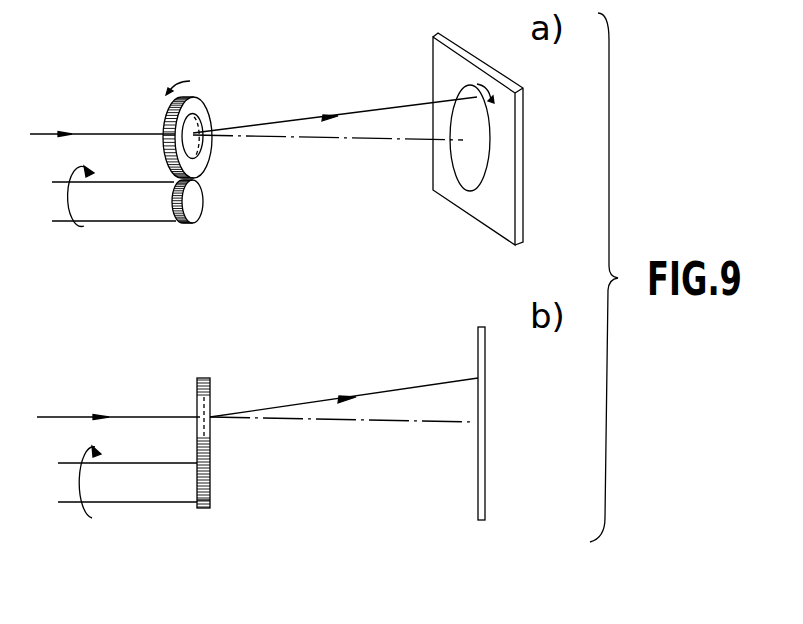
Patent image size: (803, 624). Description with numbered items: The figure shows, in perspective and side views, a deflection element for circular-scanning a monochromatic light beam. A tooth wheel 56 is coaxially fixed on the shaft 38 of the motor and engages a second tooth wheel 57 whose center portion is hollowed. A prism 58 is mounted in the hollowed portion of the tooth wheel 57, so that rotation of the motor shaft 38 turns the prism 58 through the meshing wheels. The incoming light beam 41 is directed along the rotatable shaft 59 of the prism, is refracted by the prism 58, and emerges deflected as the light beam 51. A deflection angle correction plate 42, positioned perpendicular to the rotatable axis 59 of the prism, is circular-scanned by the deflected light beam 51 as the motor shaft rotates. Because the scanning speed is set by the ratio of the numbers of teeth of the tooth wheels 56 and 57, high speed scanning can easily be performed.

The light beam 41 is at (107, 132).
The tooth wheel 57 is at (200, 95).
The prism 58 is at (193, 134).
The shaft of the motor 38 is at (112, 215).
The tooth wheel 56 is at (193, 213).
The light beam 51 is at (378, 107).
The rotatable shaft of the prism 59 is at (332, 142).
The deflection angle correction plate 42 is at (450, 62).